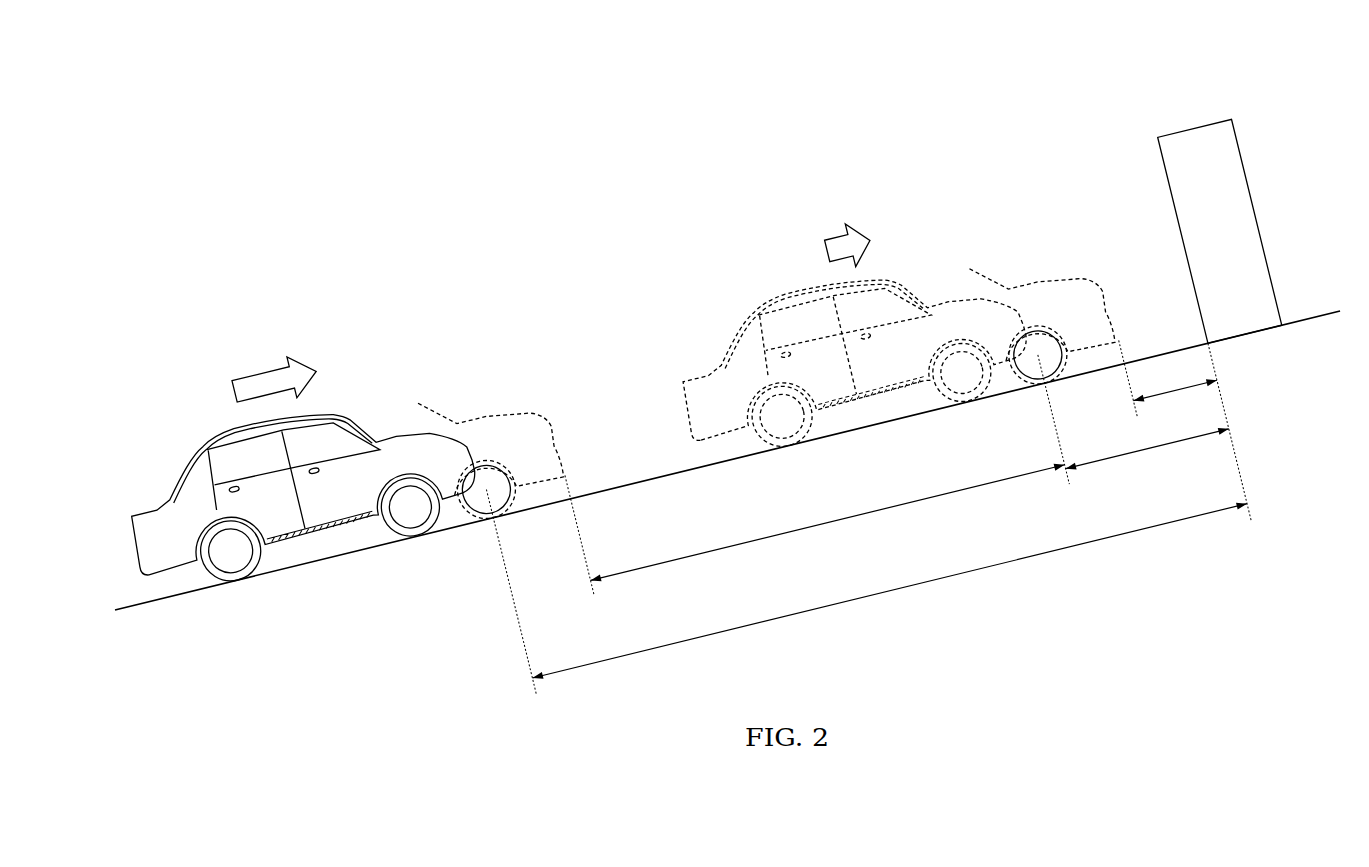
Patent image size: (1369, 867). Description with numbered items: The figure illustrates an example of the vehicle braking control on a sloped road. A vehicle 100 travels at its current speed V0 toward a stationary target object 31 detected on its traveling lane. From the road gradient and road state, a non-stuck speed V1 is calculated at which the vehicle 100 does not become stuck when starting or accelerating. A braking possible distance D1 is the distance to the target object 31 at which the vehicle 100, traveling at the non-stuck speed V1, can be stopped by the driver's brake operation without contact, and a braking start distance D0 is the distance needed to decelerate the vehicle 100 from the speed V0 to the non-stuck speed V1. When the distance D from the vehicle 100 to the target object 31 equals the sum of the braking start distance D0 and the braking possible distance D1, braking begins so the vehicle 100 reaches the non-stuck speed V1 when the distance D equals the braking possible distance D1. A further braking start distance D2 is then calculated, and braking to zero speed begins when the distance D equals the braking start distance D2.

The vehicle 100 is at (337, 408).
The target object 31 is at (1184, 130).
The speed V0 is at (272, 371).
The non-stuck speed V1 is at (845, 231).
The distance D is at (886, 576).
The braking start distance D0 is at (825, 510).
The braking possible distance D1 is at (1143, 436).
The braking start distance D2 is at (1172, 378).